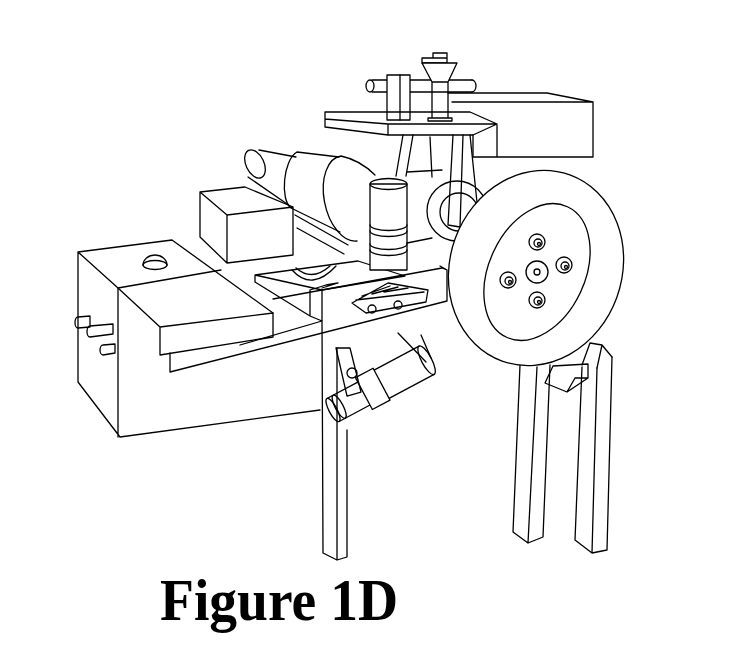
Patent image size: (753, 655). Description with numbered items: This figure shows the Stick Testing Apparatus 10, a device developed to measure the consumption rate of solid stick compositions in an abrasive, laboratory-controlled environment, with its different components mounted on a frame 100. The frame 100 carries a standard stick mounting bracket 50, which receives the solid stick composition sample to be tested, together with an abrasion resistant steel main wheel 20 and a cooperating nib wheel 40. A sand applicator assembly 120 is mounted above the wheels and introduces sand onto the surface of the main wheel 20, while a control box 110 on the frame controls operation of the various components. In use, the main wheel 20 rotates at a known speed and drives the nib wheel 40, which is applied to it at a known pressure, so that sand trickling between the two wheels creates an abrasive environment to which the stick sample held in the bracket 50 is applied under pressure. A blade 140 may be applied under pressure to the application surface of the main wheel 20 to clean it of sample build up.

The Stick Testing Apparatus 10 is at (613, 157).
The main wheel 20 is at (630, 227).
The nib wheel 40 is at (395, 163).
The stick mounting bracket 50 is at (321, 322).
The frame 100 is at (605, 428).
The control box 110 is at (75, 310).
The sand applicator assembly 120 is at (410, 54).
The blade 140 is at (568, 392).